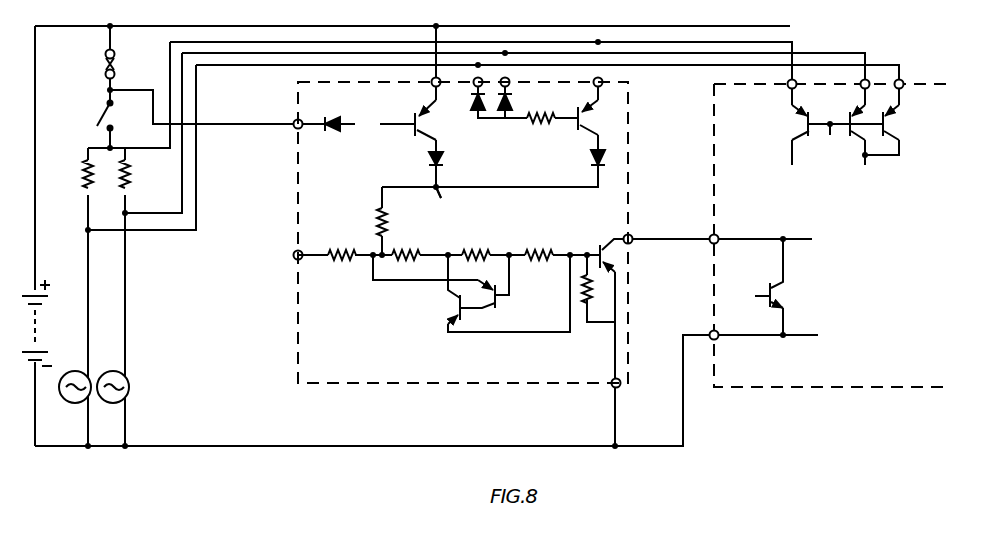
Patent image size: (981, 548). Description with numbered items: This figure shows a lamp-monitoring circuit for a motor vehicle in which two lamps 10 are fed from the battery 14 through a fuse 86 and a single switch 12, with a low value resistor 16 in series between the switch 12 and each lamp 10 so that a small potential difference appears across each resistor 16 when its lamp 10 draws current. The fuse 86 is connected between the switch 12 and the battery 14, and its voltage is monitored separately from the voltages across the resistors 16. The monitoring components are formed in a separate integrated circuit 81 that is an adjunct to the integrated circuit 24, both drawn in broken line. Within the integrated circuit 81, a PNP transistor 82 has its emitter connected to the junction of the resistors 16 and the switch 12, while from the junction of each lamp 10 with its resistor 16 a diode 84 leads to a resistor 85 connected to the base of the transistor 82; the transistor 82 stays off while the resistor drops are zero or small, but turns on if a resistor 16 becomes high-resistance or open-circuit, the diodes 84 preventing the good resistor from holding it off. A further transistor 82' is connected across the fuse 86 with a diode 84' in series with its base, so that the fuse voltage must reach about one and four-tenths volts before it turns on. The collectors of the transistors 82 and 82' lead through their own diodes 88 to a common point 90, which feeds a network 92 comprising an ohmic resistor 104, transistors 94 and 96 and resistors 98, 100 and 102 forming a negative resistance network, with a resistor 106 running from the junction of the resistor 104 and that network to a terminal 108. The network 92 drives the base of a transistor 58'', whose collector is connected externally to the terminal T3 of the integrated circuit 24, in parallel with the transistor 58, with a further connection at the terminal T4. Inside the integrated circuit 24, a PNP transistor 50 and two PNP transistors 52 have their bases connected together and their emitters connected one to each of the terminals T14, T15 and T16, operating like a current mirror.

The lamp 10 is at (82, 403).
The switch 12 is at (100, 108).
The battery 14 is at (40, 302).
The low value resistor 16 is at (92, 190).
The integrated circuit 24 is at (790, 388).
The PNP transistor 50 is at (800, 122).
The PNP transistor 52 is at (912, 120).
The transistor 58 is at (796, 295).
The transistor 58'' is at (633, 274).
The integrated circuit 81 is at (438, 385).
The PNP transistor 82 is at (620, 113).
The transistor 82' is at (404, 134).
The diode 84 is at (491, 125).
The diode 84' is at (332, 106).
The resistor 85 is at (541, 134).
The fuse 86 is at (104, 64).
The diode 88 is at (632, 155).
The common point 90 is at (455, 203).
The network 92 is at (380, 300).
The transistor 94 is at (500, 303).
The transistor 96 is at (450, 308).
The resistor 98 is at (406, 239).
The resistor 100 is at (462, 236).
The resistor 102 is at (525, 236).
The ohmic resistor 104 is at (376, 222).
The resistor 106 is at (345, 262).
The terminal 108 is at (293, 255).
The terminal T3 is at (720, 233).
The terminal T4 is at (717, 340).
The terminal T14 is at (788, 88).
The terminal T15 is at (867, 78).
The terminal T16 is at (903, 82).